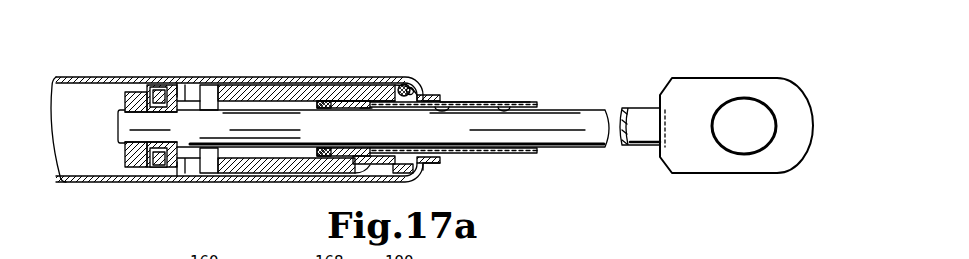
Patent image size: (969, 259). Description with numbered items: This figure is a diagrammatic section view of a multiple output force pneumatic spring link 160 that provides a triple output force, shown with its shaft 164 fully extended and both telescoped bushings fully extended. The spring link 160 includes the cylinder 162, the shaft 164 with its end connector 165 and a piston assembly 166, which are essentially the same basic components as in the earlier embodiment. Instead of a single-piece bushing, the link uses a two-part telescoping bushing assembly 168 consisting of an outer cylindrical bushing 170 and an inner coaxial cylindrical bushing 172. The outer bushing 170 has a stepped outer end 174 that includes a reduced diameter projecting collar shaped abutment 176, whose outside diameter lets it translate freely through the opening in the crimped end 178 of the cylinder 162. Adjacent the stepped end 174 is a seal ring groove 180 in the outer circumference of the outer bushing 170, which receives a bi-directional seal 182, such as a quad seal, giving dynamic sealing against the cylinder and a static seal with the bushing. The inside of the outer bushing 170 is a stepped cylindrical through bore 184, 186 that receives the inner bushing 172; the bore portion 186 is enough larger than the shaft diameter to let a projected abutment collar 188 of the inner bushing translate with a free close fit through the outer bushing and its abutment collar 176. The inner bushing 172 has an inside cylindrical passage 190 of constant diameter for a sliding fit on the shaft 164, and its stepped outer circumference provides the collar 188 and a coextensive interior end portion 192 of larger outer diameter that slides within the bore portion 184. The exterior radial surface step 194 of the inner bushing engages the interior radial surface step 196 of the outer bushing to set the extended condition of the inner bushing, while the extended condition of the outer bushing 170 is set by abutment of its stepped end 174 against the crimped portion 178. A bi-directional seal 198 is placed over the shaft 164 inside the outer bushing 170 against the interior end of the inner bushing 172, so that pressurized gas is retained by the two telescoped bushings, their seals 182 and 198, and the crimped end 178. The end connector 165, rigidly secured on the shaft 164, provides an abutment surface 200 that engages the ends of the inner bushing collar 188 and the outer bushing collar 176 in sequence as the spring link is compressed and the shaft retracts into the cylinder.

The spring link 160 is at (250, 70).
The cylinder 162 is at (328, 77).
The shaft 164 is at (588, 115).
The end connector 165 is at (707, 78).
The piston assembly 166 is at (122, 85).
The telescoping bushing assembly 168 is at (357, 72).
The outer bushing 170 is at (218, 160).
The inner bushing 172 is at (358, 164).
The stepped outer end 174 is at (427, 95).
The abutment collar 176 is at (438, 158).
The crimped end 178 is at (423, 170).
The seal ring groove 180 is at (398, 85).
The bi-directional seal 182 is at (408, 86).
The stepped bore portion 184 is at (217, 152).
The stepped bore portion 186 is at (450, 104).
The abutment collar 188 is at (523, 154).
The inside cylindrical passage 190 is at (506, 102).
The interior end portion 192 is at (350, 108).
The exterior radial surface step 194 is at (370, 173).
The interior radial surface step 196 is at (368, 108).
The bi-directional seal 198 is at (323, 152).
The abutment surface 200 is at (660, 154).